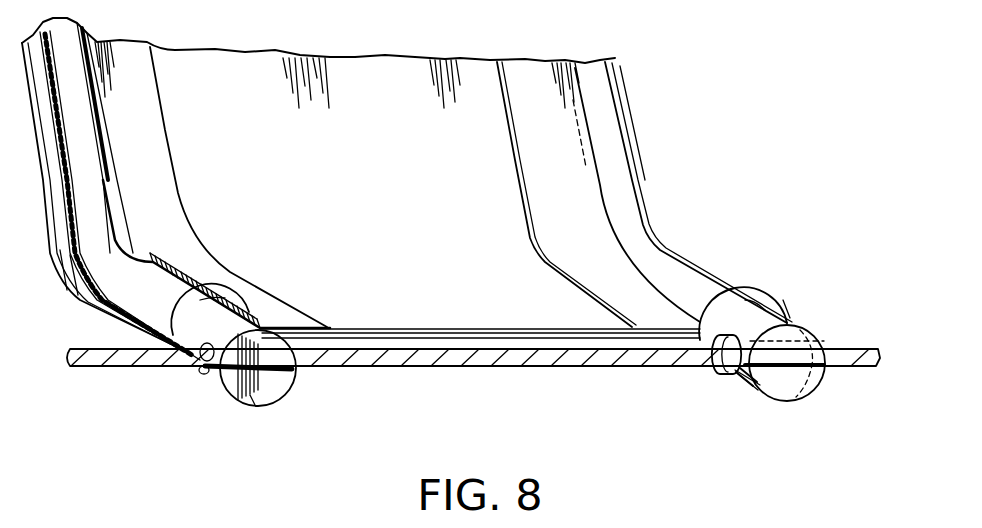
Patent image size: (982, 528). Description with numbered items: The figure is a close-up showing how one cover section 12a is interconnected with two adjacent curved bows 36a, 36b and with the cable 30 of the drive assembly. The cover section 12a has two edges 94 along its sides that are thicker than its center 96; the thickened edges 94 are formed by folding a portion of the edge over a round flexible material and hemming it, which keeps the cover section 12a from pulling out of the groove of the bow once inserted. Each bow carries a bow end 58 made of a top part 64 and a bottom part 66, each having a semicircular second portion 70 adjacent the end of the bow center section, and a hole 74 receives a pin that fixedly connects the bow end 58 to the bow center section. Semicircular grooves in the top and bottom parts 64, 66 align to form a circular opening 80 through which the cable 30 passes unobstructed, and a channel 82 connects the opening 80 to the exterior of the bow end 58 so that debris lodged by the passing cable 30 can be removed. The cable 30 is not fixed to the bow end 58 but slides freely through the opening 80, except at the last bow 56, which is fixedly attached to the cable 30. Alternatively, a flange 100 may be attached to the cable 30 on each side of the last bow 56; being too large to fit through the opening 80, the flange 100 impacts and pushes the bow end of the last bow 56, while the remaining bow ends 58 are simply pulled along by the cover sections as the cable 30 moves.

The cover section 12a is at (366, 297).
The cable 30 is at (500, 368).
The curved bow 36a is at (113, 325).
The curved bow 36b is at (643, 240).
The last bow 56 is at (618, 204).
The bow end 58 is at (247, 397).
The top part of bow end 64 is at (270, 343).
The bottom part of bow end 66 is at (268, 403).
The semicircular second portion 70 is at (255, 327).
The hole 74 is at (190, 288).
The circular opening 80 is at (203, 370).
The channel 82 is at (237, 390).
The edge 94 is at (162, 187).
The center 96 is at (408, 305).
The flange 100 is at (712, 372).